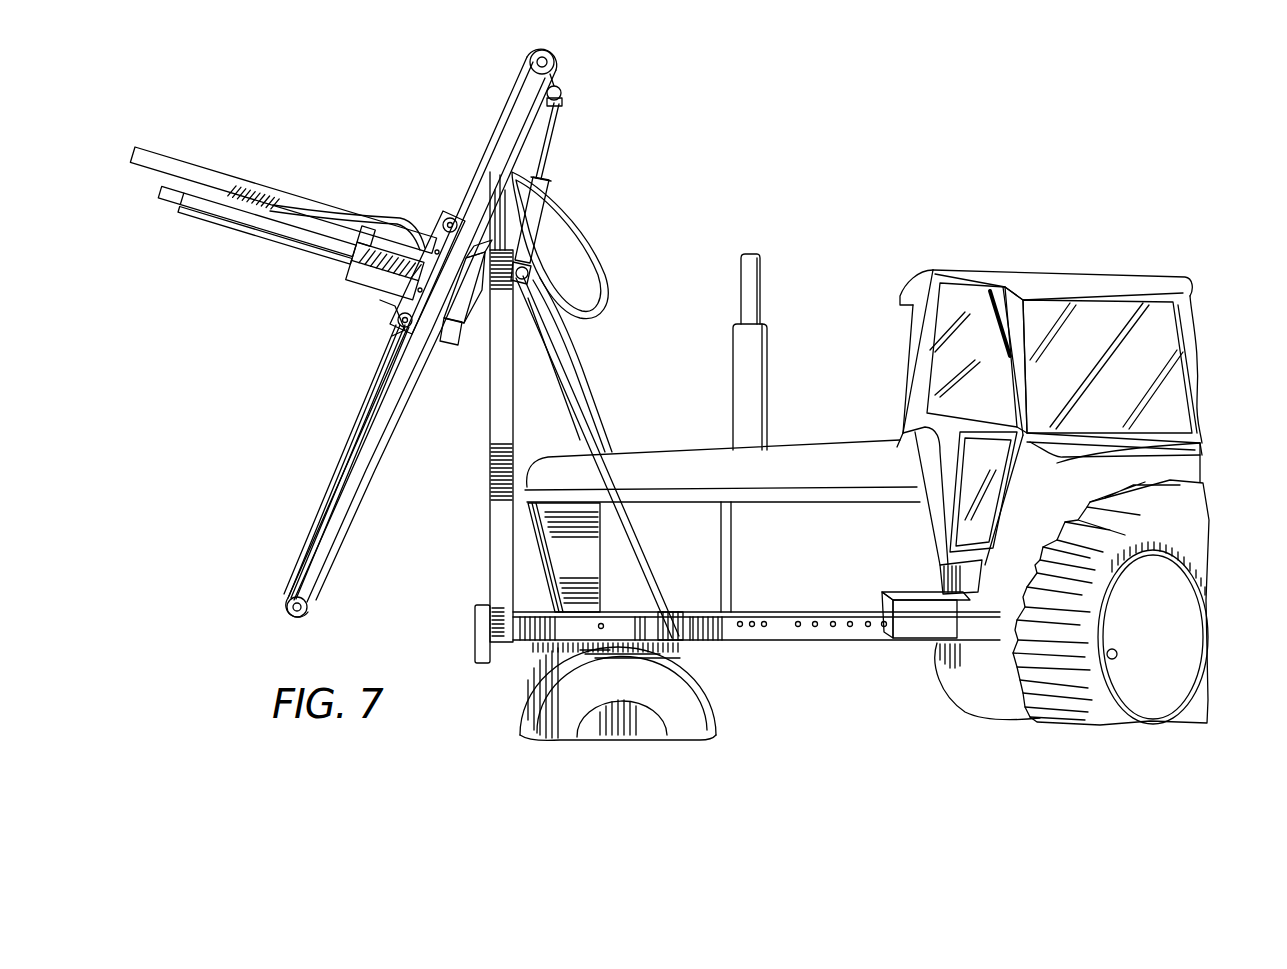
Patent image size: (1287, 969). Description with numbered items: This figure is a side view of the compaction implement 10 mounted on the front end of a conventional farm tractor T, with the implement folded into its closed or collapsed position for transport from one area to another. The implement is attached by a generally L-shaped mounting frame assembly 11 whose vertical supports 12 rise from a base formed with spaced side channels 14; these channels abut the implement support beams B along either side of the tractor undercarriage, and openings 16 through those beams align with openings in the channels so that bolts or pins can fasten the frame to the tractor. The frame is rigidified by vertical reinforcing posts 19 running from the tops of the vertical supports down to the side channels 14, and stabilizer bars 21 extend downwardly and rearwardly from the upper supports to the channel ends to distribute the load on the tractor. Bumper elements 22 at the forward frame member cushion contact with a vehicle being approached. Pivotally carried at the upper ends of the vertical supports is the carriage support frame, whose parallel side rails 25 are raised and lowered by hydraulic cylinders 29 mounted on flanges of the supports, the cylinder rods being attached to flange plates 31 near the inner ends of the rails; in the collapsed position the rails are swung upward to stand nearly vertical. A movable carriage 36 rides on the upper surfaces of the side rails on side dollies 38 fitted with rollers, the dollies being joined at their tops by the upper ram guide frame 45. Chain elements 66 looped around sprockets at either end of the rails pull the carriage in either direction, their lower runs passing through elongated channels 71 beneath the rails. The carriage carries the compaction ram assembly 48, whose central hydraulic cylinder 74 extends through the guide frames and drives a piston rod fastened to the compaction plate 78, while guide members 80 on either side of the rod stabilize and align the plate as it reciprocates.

The compaction implement 10 is at (316, 98).
The mounting frame assembly 11 is at (490, 464).
The vertical supports 12 is at (500, 228).
The side channels 14 is at (716, 640).
The openings 16 is at (800, 626).
The vertical reinforcing posts 19 is at (490, 553).
The stabilizer bars 21 is at (578, 410).
The bumper elements 22 is at (475, 630).
The side rails 25 is at (318, 590).
The hydraulic cylinders 29 is at (540, 205).
The flange plates 31 is at (572, 95).
The movable carriage 36 is at (380, 308).
The side dollies 38 is at (430, 245).
The upper ram guide frame 45 is at (355, 250).
The compaction ram assembly 48 is at (262, 187).
The chain elements 66 is at (350, 450).
The elongated channels 71 is at (355, 505).
The central hydraulic cylinder 74 is at (499, 118).
The compaction plate 78 is at (470, 328).
The guide members 80 is at (160, 152).
The implement support beams B is at (778, 624).
The farm tractor T is at (1005, 268).